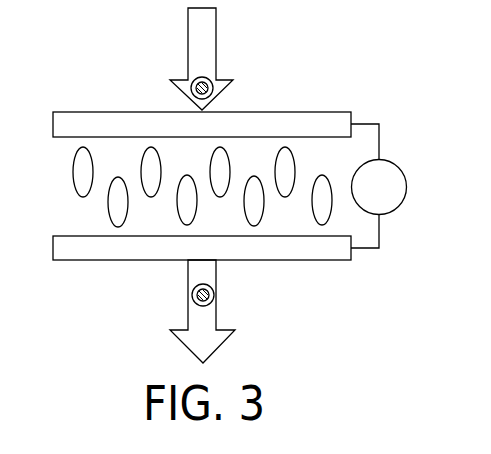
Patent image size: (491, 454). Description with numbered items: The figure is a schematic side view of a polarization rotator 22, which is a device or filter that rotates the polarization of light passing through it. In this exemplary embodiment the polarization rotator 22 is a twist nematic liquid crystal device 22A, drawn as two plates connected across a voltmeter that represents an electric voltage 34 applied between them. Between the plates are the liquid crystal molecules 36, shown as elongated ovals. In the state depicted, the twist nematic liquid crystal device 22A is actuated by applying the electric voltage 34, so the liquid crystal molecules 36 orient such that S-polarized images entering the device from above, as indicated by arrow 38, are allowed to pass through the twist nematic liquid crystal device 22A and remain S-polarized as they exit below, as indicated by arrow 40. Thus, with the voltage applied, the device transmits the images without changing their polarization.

The polarization rotator 22 is at (108, 50).
The twist nematic liquid crystal device 22A is at (98, 287).
The electric voltage 34 is at (397, 187).
The liquid crystal molecules 36 is at (151, 172).
The arrow 38 is at (205, 38).
The arrow 40 is at (210, 342).